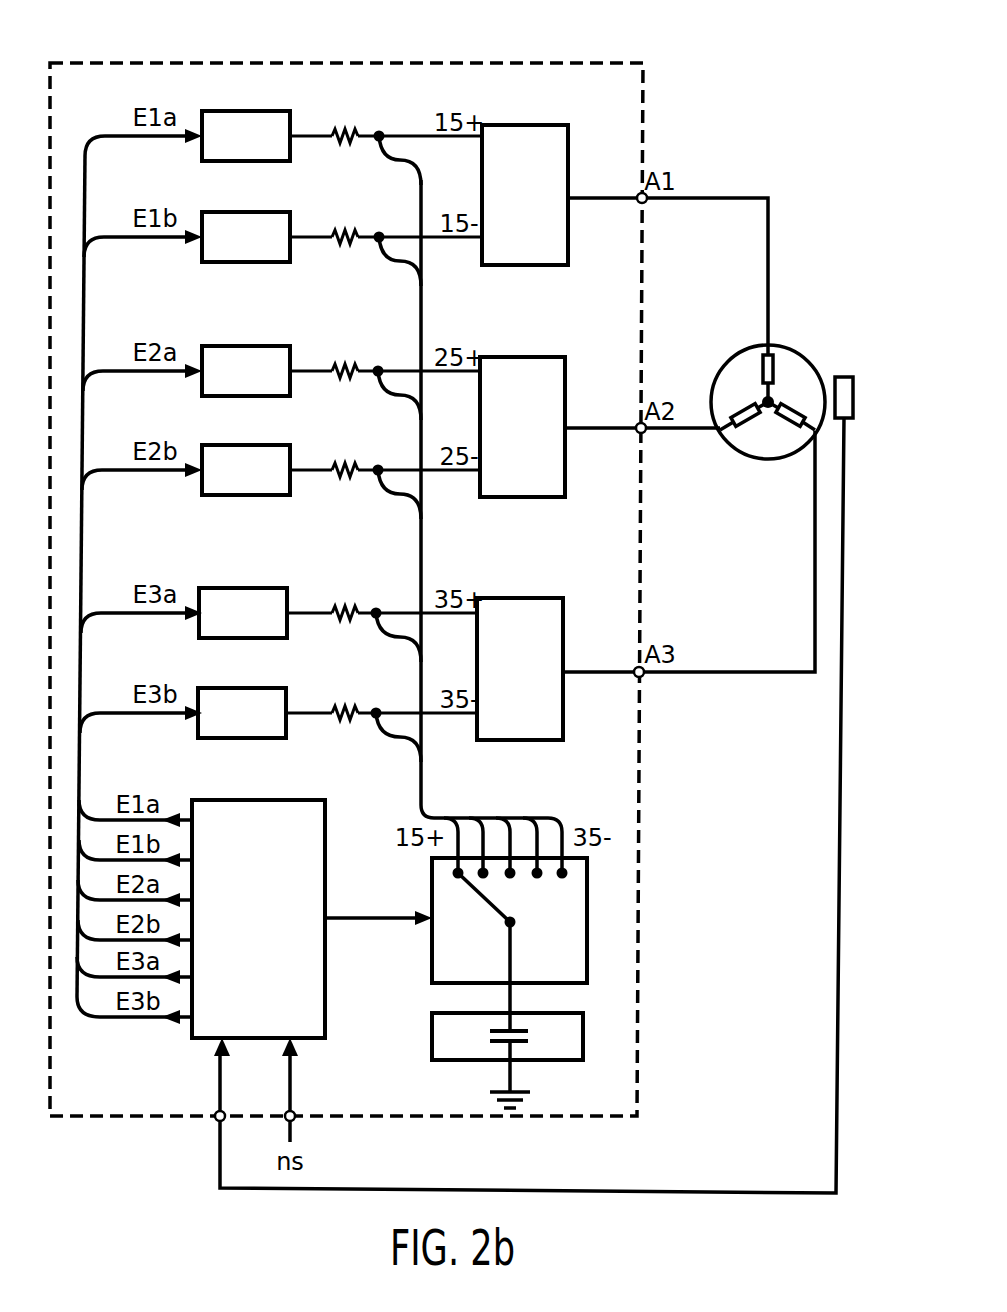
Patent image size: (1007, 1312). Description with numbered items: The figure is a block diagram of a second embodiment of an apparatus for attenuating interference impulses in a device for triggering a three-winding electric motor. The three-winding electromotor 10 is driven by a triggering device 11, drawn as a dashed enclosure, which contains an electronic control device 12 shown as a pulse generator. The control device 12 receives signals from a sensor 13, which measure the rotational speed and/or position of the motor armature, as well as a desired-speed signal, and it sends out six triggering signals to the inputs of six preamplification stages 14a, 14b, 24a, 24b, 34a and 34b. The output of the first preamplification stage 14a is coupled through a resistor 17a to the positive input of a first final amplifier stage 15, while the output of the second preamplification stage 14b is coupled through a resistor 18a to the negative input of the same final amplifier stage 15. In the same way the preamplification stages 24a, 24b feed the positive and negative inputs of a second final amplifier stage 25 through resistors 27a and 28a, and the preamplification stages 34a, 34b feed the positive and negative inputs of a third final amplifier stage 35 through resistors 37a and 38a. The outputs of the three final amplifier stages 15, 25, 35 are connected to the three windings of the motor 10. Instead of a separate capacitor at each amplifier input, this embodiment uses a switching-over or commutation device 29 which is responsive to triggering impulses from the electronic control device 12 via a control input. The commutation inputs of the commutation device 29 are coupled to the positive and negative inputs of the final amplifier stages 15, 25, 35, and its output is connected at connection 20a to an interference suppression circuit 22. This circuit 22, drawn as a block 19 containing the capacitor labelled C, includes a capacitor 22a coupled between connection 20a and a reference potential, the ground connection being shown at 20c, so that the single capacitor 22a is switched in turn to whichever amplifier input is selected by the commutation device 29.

The three-winding electromotor 10 is at (740, 350).
The triggering device 11 is at (639, 757).
The electronic control device 12 is at (325, 998).
The sensor 13 is at (844, 377).
The first preamplification stage 14a is at (262, 111).
The second preamplification stage 14b is at (262, 262).
The first final amplifier stage 15 is at (520, 265).
The resistor 17a is at (338, 128).
The resistor 18a is at (338, 229).
The capacitor block 19 is at (432, 1040).
The connection 20a is at (512, 998).
The ground connection 20c is at (512, 1076).
The interference suppression circuit 22 is at (498, 1069).
The capacitor 22a is at (497, 1050).
The preamplification stage 24a is at (262, 346).
The preamplification stage 24b is at (262, 495).
The final amplifier stage 25 is at (520, 497).
The resistor 27a is at (338, 363).
The resistor 28a is at (338, 462).
The commutation device 29 is at (587, 963).
The preamplification stage 34a is at (258, 588).
The preamplification stage 34b is at (236, 738).
The final amplifier stage 35 is at (511, 740).
The resistor 37a is at (338, 605).
The resistor 38a is at (338, 705).